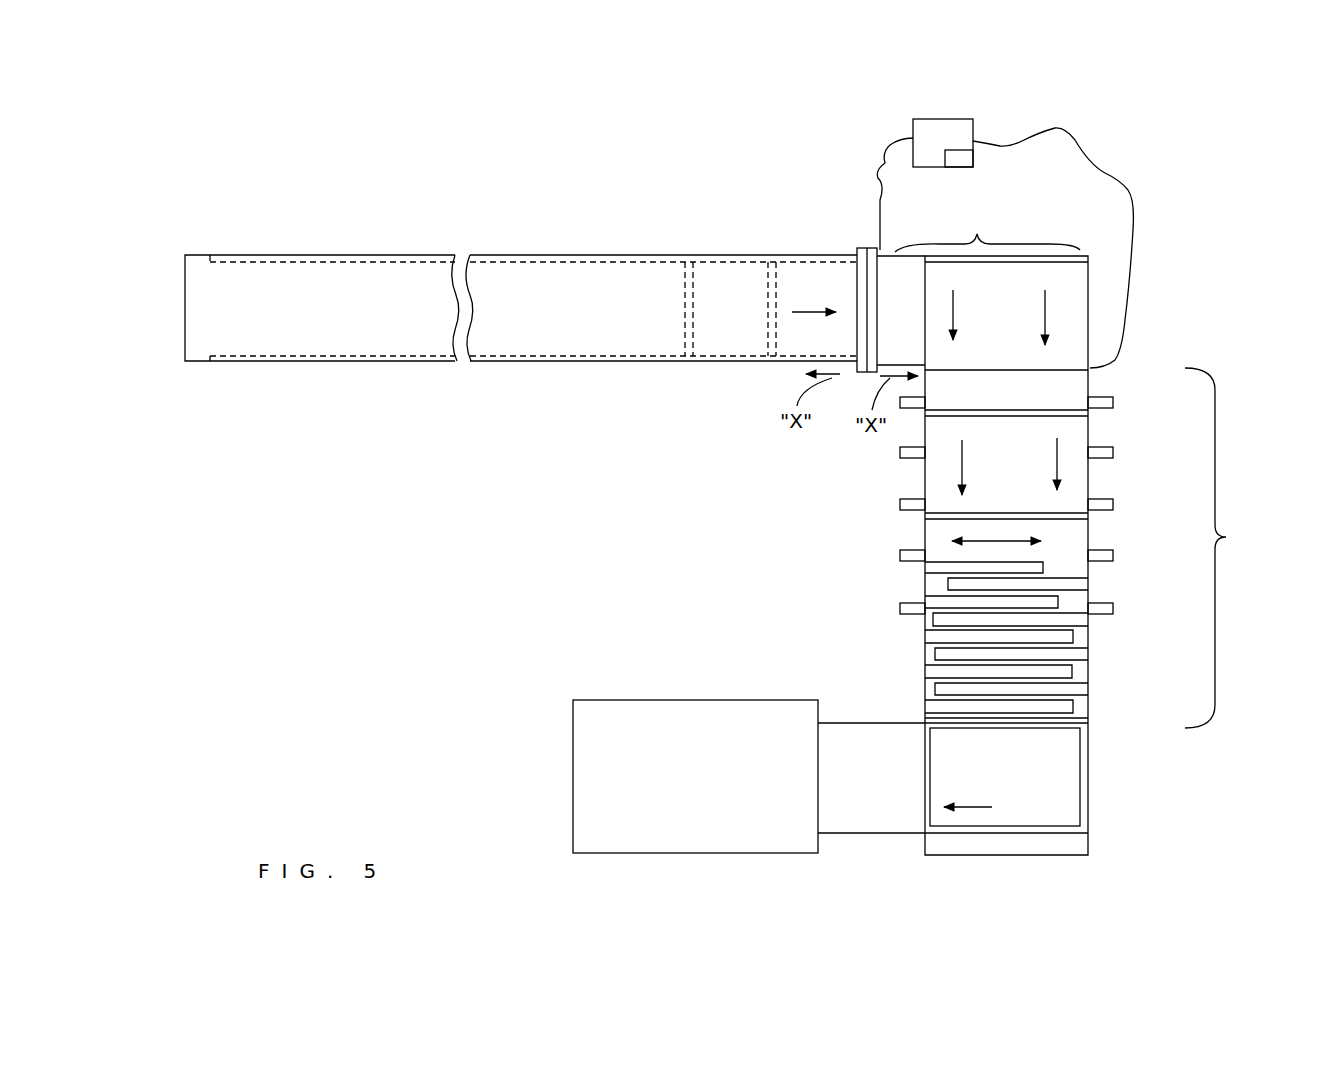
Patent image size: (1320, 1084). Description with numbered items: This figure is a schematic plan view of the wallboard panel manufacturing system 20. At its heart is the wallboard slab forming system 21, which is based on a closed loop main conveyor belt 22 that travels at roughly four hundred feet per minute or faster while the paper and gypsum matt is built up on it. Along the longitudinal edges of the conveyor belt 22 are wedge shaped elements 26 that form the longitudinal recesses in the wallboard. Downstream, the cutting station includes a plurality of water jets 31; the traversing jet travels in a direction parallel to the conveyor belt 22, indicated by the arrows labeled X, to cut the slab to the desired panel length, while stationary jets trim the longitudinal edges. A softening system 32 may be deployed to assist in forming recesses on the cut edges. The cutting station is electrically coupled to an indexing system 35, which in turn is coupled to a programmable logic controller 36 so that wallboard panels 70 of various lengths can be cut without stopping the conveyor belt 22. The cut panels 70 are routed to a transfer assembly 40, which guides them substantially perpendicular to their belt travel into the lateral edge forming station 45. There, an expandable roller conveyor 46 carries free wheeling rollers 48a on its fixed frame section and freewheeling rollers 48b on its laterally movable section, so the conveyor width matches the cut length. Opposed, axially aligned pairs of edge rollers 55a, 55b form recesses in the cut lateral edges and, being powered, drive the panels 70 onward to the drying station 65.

The wallboard panel manufacturing system 20 is at (781, 487).
The wallboard slab forming system 21 is at (543, 253).
The main conveyor belt 22 is at (202, 315).
The wedge shaped elements 26 is at (592, 255).
The water jets 31 is at (862, 374).
The softening system 32 is at (770, 350).
The indexing system 35 is at (960, 131).
The programmable logic controller 36 is at (960, 153).
The transfer assembly 40 is at (982, 528).
The lateral edge forming station 45 is at (1219, 548).
The roller conveyor 46 is at (1127, 497).
The free wheeling rollers 48a is at (1085, 688).
The freewheeling rollers 48b is at (922, 705).
The edge roller pairs 55a is at (1095, 397).
The edge roller pairs 55b is at (905, 400).
The drying station 65 is at (770, 830).
The wallboard panels 70 is at (1015, 320).